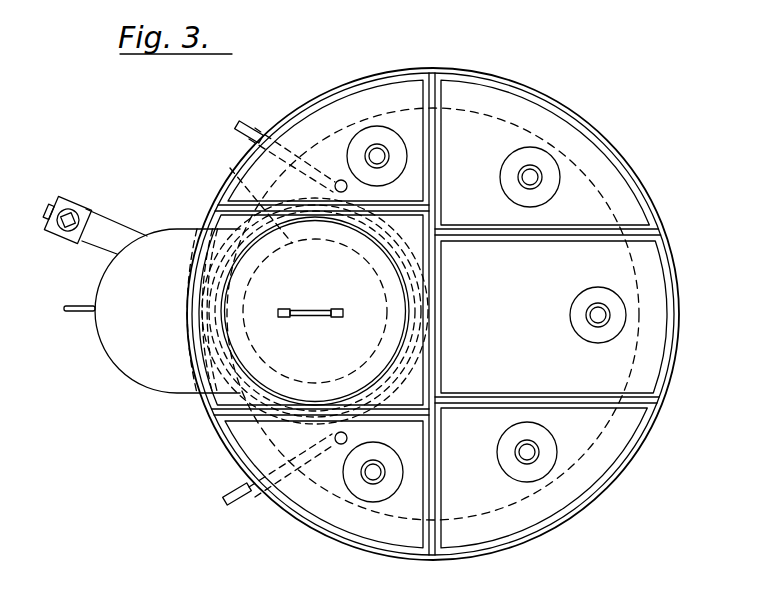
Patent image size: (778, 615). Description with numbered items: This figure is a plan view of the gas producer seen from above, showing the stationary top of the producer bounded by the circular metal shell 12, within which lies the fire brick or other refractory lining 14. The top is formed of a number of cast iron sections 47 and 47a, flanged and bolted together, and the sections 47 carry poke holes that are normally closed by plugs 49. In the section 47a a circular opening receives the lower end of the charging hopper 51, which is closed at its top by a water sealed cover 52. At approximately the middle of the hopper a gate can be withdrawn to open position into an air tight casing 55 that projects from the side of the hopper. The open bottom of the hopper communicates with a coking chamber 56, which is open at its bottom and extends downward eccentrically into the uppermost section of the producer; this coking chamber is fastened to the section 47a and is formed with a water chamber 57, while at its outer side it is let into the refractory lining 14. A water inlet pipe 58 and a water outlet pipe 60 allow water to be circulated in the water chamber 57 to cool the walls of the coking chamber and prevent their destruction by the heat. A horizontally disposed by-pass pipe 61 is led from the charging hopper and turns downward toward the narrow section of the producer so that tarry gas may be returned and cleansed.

The metal shell 12 is at (672, 371).
The refractory lining 14 is at (634, 276).
The top sections 47 is at (471, 334).
The hopper top section 47a is at (408, 393).
The plugs 49 is at (536, 174).
The charging hopper 51 is at (362, 257).
The water sealed cover 52 is at (315, 311).
The air tight casing 55 is at (152, 311).
The coking chamber 56 is at (230, 168).
The water chamber 57 is at (429, 298).
The water inlet pipe 58 is at (236, 503).
The water outlet pipe 60 is at (248, 128).
The by-pass pipe 61 is at (107, 228).